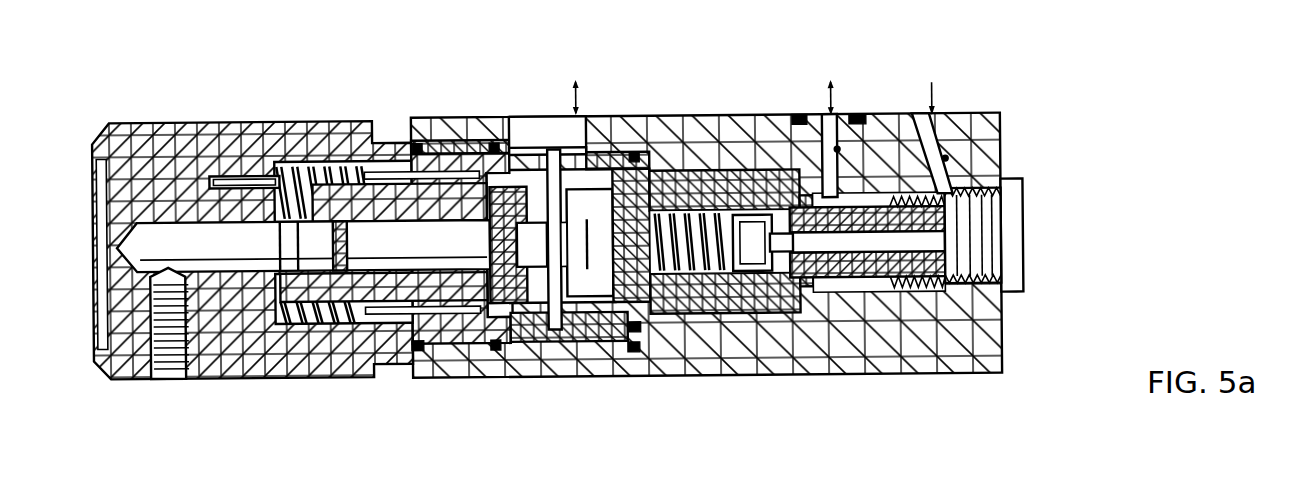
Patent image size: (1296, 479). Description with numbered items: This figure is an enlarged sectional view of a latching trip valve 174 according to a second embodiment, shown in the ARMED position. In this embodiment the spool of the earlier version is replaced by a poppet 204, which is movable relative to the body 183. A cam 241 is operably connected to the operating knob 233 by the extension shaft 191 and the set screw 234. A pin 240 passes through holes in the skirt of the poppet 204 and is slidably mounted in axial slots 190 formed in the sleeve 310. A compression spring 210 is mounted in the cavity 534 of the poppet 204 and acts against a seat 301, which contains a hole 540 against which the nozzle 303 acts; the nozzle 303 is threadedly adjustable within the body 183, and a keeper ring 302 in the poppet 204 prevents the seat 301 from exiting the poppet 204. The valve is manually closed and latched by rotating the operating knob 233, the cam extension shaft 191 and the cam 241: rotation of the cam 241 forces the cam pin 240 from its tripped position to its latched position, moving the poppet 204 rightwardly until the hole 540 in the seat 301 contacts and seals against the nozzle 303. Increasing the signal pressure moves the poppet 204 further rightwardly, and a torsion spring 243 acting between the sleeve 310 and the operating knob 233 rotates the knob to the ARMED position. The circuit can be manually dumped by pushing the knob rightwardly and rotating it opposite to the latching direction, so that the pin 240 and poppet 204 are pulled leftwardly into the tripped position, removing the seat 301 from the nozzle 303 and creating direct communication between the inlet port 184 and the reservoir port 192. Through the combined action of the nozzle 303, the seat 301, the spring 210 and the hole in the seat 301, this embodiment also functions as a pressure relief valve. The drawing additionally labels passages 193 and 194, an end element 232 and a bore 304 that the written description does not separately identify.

The latching trip valve 174 is at (1030, 113).
The body 183 is at (457, 117).
The inlet port 184 is at (980, 127).
The axial slots 190 is at (553, 124).
The extension shaft 191 is at (462, 160).
The reservoir port 192 is at (855, 123).
The inlet port 193 is at (810, 126).
The outlet port 194 is at (910, 121).
The poppet 204 is at (578, 348).
The compression spring 210 is at (690, 284).
The end cap 232 is at (93, 106).
The operating knob 233 is at (243, 121).
The set screw 234 is at (195, 327).
The pin 240 is at (555, 300).
The cam 241 is at (540, 335).
The torsion spring 243 is at (327, 122).
The seat 301 is at (737, 172).
The keeper ring 302 is at (800, 288).
The nozzle 303 is at (940, 316).
The axial bore 304 is at (947, 245).
The sleeve 310 is at (392, 364).
The cavity 534 is at (665, 336).
The hole 540 is at (758, 280).